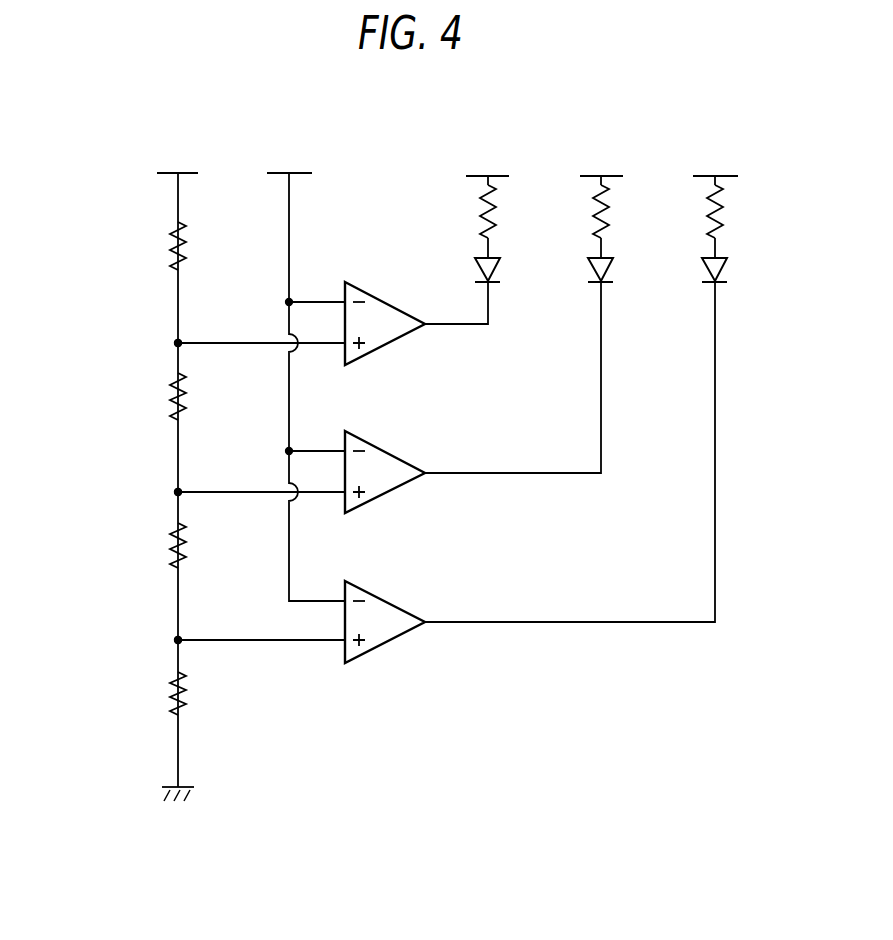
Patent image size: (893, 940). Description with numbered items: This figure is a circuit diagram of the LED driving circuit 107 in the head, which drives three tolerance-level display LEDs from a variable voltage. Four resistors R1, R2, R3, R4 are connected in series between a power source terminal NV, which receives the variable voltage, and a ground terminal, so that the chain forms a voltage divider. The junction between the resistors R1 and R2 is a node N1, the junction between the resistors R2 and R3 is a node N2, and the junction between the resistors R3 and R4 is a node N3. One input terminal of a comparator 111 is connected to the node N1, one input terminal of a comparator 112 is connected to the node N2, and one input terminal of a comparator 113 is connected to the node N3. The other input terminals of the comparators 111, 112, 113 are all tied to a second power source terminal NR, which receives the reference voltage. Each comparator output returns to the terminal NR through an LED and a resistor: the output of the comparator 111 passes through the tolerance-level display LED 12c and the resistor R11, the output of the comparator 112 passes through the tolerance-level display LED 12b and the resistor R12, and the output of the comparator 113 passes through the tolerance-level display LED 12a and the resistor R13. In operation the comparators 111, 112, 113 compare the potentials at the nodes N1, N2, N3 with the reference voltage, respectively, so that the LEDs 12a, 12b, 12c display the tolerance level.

The LED driving circuit 107 is at (93, 104).
The power source terminal NV is at (169, 172).
The power source terminal NR is at (280, 172).
The resistor R1 is at (173, 249).
The resistor R2 is at (173, 399).
The resistor R3 is at (173, 547).
The resistor R4 is at (173, 696).
The node N1 is at (174, 341).
The node N2 is at (174, 490).
The node N3 is at (174, 638).
The comparator 111 is at (384, 302).
The comparator 112 is at (384, 451).
The comparator 113 is at (384, 601).
The resistor R11 is at (492, 230).
The resistor R12 is at (605, 230).
The resistor R13 is at (719, 230).
The tolerance-level display LED 12c is at (492, 284).
The tolerance-level display LED 12b is at (605, 284).
The tolerance-level display LED 12a is at (719, 284).